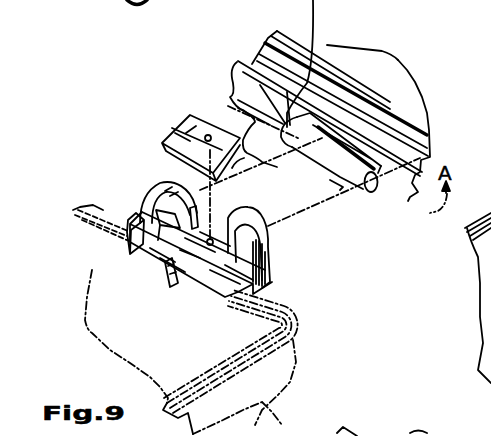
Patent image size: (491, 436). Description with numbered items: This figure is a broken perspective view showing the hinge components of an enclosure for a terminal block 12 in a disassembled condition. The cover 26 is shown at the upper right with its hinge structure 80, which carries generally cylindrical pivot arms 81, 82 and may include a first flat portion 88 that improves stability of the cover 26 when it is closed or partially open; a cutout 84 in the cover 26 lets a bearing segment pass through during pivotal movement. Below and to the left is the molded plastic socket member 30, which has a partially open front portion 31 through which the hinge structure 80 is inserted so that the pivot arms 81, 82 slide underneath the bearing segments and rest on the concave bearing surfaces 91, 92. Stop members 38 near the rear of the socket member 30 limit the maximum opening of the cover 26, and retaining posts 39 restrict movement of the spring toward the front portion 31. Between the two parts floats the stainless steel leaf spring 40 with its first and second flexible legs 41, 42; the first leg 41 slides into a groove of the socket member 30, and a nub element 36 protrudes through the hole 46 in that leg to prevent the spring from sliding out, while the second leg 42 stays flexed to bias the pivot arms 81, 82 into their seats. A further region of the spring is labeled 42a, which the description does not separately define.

The terminal block 12 is at (490, 434).
The cover 26 is at (407, 93).
The socket member 30 is at (135, 195).
The partially open front portion 31 is at (133, 248).
The nub element 36 is at (232, 267).
The stop members 38 is at (197, 200).
The retaining posts 39 is at (172, 277).
The leaf spring 40 is at (173, 140).
The first flexible leg 41 is at (233, 170).
The second flexible leg 42 is at (208, 134).
The plate edge 42a is at (173, 132).
The hole 46 is at (187, 133).
The hinge structure 80 is at (352, 216).
The pivot arm 81 is at (240, 76).
The pivot arm 82 is at (372, 190).
The cutout 84 is at (377, 160).
The first flat portion 88 is at (478, 282).
The bearing surface 91 is at (203, 214).
The bearing surface 92 is at (232, 204).